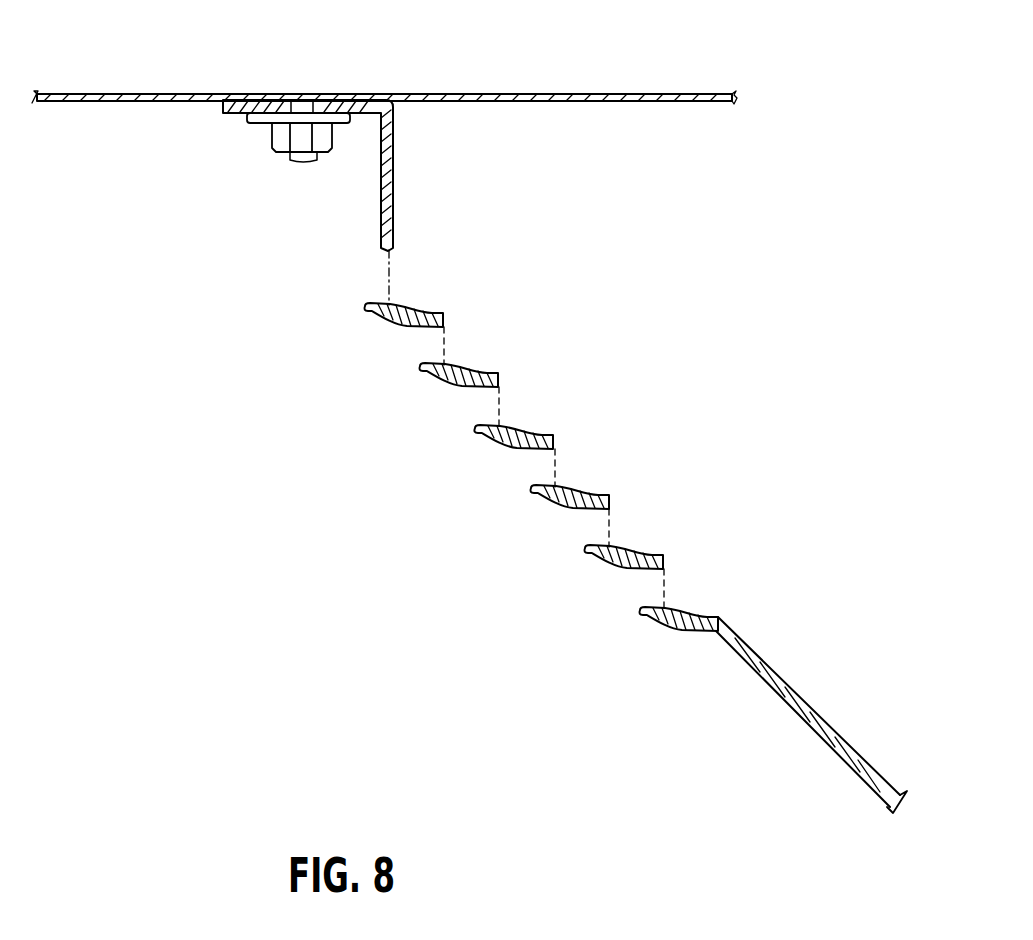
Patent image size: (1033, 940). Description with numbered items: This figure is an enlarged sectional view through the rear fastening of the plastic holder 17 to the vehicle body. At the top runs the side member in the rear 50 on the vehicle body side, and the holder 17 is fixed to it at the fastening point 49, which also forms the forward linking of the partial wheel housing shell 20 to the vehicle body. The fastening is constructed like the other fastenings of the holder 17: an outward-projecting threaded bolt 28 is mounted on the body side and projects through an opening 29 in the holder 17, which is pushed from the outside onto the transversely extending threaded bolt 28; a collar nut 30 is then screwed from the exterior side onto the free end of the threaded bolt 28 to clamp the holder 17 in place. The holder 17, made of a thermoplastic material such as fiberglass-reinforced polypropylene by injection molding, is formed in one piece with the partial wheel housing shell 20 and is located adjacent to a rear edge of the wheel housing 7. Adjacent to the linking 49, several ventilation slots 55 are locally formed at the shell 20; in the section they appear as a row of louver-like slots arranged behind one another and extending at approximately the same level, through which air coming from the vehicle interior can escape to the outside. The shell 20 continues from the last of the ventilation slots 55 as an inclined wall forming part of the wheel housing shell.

The wheel housing 7 is at (155, 323).
The holder 17 is at (762, 682).
The partial wheel housing shell 20 is at (868, 790).
The threaded bolt 28 is at (297, 101).
The opening 29 is at (267, 122).
The collar nut 30 is at (283, 148).
The fastening at side member 49 is at (308, 101).
The side member in the rear 50 is at (90, 93).
The ventilation slots 55 is at (433, 343).